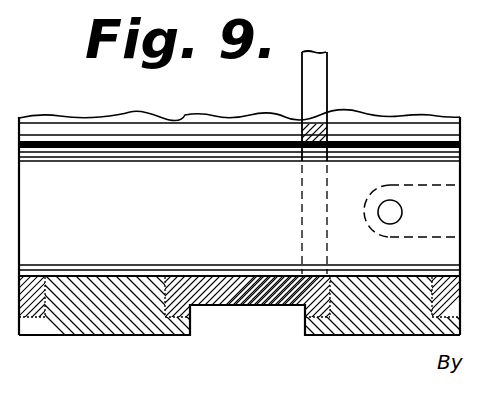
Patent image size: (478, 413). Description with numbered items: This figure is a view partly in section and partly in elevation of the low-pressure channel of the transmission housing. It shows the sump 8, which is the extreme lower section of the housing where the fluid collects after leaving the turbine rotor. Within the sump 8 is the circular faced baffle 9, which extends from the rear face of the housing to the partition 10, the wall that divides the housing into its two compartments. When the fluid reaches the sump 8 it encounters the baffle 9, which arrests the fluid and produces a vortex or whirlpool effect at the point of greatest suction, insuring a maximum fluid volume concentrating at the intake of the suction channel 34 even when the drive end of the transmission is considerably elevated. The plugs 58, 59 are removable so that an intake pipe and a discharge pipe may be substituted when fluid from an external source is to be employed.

The sump 8 is at (232, 248).
The circular faced baffle 9 is at (236, 114).
The partition 10 is at (312, 86).
The suction channel 34 is at (369, 258).
The plug 58 is at (343, 325).
The plug 59 is at (93, 320).